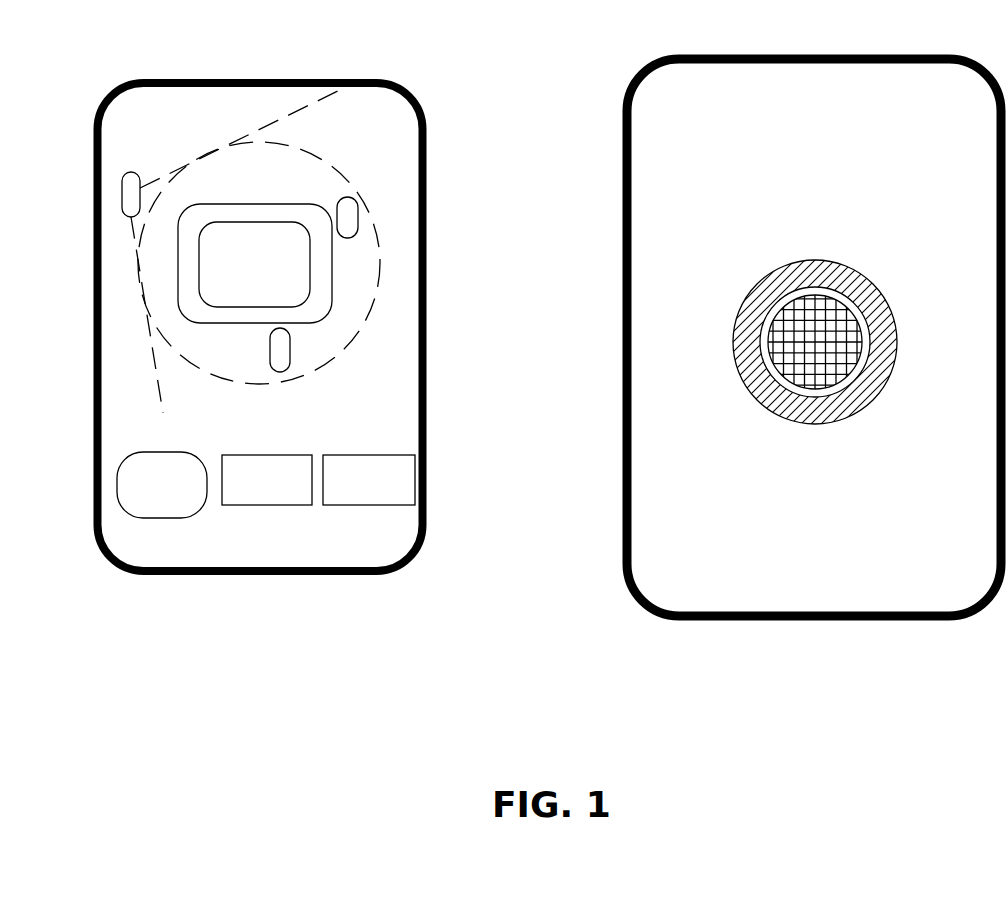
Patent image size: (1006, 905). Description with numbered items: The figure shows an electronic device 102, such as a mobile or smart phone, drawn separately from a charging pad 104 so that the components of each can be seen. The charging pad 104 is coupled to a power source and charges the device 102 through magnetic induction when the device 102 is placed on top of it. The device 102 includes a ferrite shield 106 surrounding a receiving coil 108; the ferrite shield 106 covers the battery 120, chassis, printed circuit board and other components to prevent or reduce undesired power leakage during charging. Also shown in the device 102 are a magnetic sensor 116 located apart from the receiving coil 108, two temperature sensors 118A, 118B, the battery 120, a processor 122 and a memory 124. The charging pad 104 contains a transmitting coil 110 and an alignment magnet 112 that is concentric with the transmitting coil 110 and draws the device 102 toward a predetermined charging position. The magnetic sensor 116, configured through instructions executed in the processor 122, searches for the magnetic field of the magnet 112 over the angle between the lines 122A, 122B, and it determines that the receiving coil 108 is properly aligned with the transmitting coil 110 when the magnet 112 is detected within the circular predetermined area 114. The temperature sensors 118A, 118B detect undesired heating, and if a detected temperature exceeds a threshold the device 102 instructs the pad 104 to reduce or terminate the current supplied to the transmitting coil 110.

The electronic device 102 is at (302, 80).
The charging pad 104 is at (792, 58).
The ferrite shield 106 is at (213, 203).
The receiving coil 108 is at (311, 265).
The transmitting coil 110 is at (850, 418).
The magnet 112 is at (842, 300).
The predetermined area 114 is at (349, 356).
The magnetic sensor 116 is at (130, 172).
The temperature sensor 118A is at (292, 360).
The temperature sensor 118B is at (349, 197).
The battery 120 is at (162, 522).
The processor 122 is at (262, 506).
The line 122A is at (247, 130).
The line 122B is at (172, 405).
The memory 124 is at (353, 507).